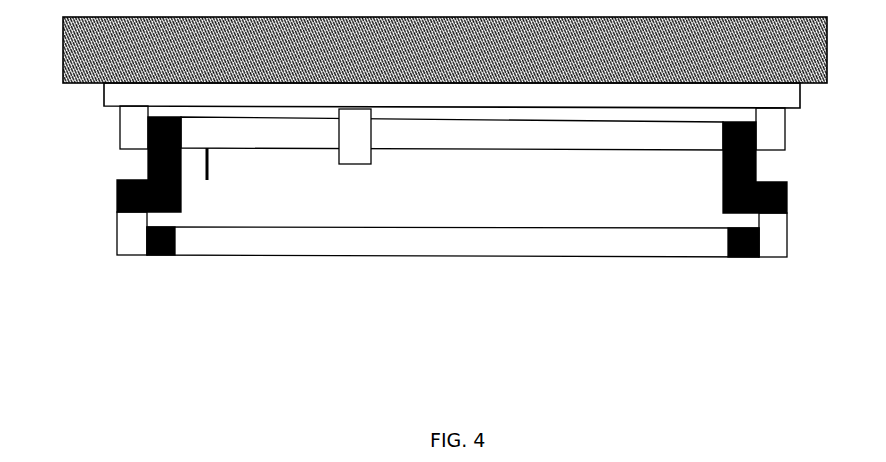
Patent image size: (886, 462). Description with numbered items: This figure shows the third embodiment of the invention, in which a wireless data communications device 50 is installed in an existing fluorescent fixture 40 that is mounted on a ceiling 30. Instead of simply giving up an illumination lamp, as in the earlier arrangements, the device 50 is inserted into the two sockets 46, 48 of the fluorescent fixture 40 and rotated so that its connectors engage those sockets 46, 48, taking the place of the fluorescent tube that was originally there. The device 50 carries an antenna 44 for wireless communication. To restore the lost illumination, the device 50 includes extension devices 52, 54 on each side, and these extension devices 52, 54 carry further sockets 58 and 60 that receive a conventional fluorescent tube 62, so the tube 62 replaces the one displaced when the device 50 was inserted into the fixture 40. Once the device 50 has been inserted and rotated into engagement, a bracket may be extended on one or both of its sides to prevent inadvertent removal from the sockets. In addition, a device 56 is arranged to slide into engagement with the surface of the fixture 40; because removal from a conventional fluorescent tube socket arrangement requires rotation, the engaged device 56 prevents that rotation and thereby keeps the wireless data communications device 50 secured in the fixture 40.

The ceiling 30 is at (70, 86).
The fluorescent fixture 40 is at (103, 87).
The antenna 44 is at (208, 167).
The socket 46 is at (785, 129).
The socket 48 is at (120, 127).
The wireless data communications device 50 is at (452, 135).
The extension device 52 is at (787, 198).
The extension device 54 is at (132, 212).
The anti-rotation device 56 is at (355, 150).
The further socket 58 is at (774, 237).
The further socket 60 is at (132, 233).
The fluorescent tube 62 is at (273, 243).